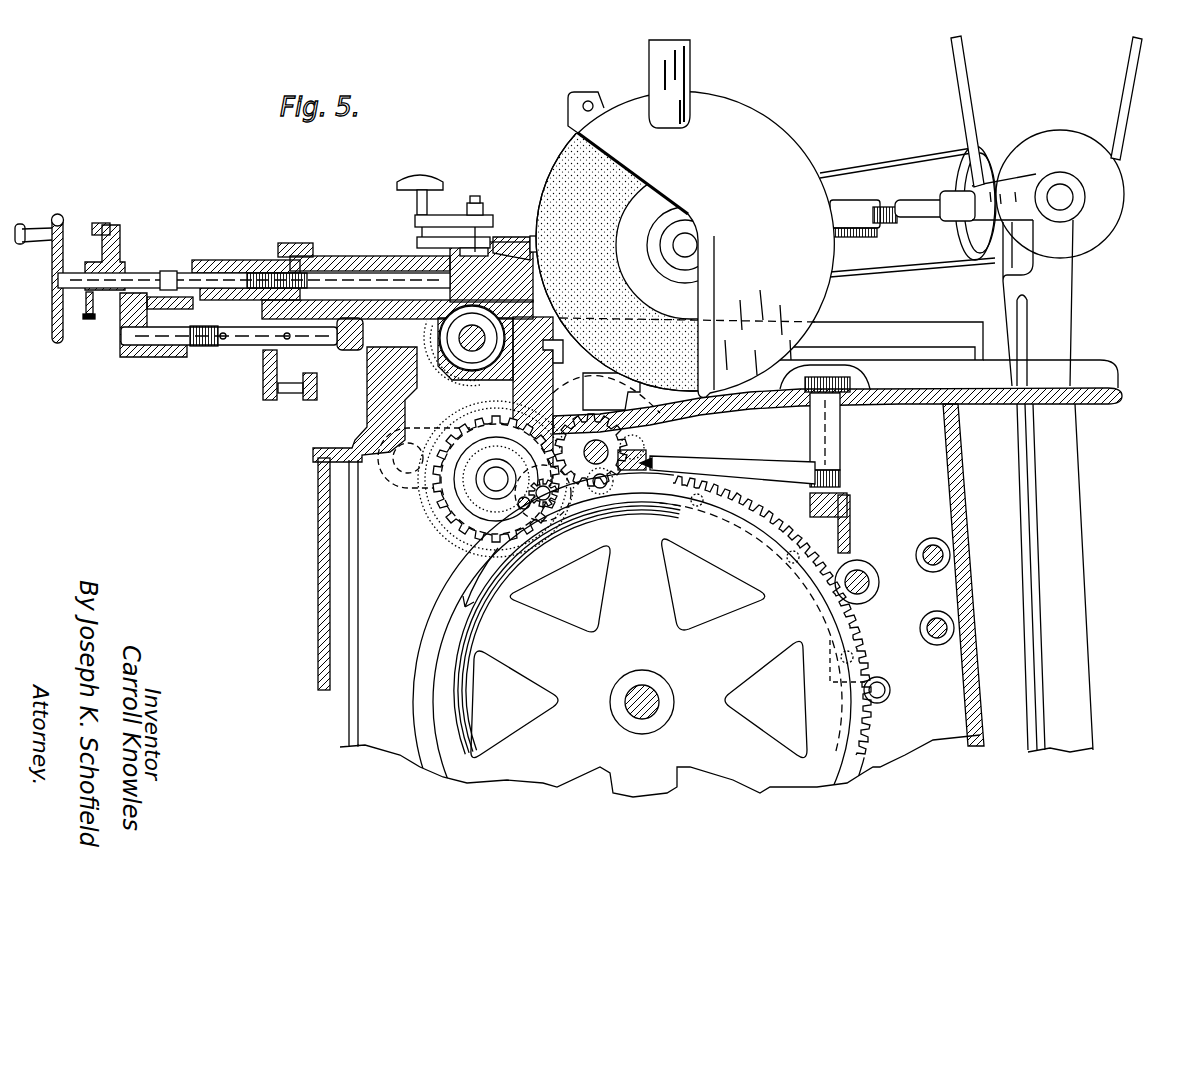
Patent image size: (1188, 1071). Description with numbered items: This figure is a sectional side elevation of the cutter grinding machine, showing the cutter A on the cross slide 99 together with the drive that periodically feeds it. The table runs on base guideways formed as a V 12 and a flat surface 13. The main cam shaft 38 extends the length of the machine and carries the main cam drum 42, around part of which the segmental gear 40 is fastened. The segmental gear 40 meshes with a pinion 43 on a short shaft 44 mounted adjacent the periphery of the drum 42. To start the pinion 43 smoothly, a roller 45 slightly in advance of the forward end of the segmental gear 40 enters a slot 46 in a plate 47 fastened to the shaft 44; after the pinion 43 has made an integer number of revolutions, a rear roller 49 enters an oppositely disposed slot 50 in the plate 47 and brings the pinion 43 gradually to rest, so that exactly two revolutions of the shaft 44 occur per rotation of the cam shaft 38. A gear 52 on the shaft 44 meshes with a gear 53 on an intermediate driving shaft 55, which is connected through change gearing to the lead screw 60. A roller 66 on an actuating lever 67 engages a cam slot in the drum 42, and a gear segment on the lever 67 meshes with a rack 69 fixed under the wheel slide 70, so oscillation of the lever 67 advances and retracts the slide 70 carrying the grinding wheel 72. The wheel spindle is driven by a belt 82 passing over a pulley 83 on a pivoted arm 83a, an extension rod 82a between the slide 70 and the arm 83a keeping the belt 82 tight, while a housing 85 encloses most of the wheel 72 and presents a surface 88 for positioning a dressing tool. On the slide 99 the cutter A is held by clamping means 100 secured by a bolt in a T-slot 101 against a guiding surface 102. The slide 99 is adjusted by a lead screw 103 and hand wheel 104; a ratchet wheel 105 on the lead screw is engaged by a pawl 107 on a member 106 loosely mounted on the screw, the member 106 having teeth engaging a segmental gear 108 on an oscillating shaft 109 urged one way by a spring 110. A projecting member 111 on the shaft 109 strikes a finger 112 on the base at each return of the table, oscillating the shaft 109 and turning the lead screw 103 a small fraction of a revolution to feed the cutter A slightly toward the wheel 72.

The V guideway 12 is at (400, 352).
The flat surface guideway 13 is at (556, 358).
The main cam shaft 38 is at (656, 697).
The segmental gear 40 is at (858, 624).
The main cam drum 42 is at (860, 754).
The pinion 43 is at (521, 510).
The short shaft 44 is at (452, 520).
The roller 45 is at (556, 502).
The slot 46 is at (541, 503).
The plate 47 is at (440, 480).
The roller 49 is at (884, 688).
The slot 50 is at (485, 535).
The gear 52 is at (447, 506).
The gear 53 is at (642, 456).
The intermediate driving shaft 55 is at (610, 490).
The lead screw 60 is at (466, 328).
The roller 66 is at (665, 525).
The actuating lever 67 is at (735, 463).
The rack 69 is at (850, 393).
The wheel slide 70 is at (885, 322).
The grinding wheel 72 is at (575, 162).
The driving belt 82 is at (862, 164).
The extension rod 82a is at (898, 206).
The pulley 83 is at (1060, 132).
The arm 83a is at (1062, 332).
The housing 85 is at (753, 118).
The positioning surface 88 is at (687, 42).
The cross slide 99 is at (350, 256).
The clamping means 100 is at (445, 215).
The T-slot 101 is at (485, 245).
The guiding surface 102 is at (502, 256).
The lead screw 103 is at (255, 260).
The hand wheel 104 is at (60, 343).
The ratchet wheel 105 is at (101, 300).
The member 106 is at (120, 250).
The pawl 107 is at (100, 223).
The segmental gear 108 is at (124, 352).
The oscillating shaft 109 is at (248, 346).
The spring 110 is at (204, 348).
The projecting member 111 is at (264, 385).
The finger 112 is at (281, 400).
The cutter A is at (508, 250).